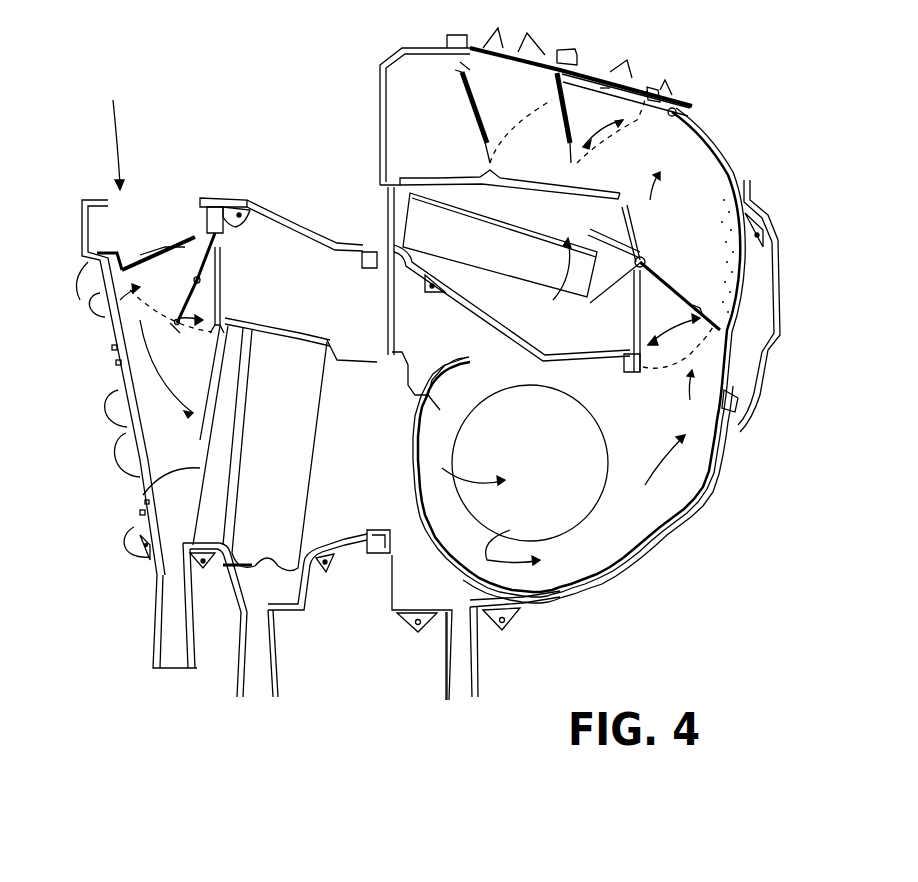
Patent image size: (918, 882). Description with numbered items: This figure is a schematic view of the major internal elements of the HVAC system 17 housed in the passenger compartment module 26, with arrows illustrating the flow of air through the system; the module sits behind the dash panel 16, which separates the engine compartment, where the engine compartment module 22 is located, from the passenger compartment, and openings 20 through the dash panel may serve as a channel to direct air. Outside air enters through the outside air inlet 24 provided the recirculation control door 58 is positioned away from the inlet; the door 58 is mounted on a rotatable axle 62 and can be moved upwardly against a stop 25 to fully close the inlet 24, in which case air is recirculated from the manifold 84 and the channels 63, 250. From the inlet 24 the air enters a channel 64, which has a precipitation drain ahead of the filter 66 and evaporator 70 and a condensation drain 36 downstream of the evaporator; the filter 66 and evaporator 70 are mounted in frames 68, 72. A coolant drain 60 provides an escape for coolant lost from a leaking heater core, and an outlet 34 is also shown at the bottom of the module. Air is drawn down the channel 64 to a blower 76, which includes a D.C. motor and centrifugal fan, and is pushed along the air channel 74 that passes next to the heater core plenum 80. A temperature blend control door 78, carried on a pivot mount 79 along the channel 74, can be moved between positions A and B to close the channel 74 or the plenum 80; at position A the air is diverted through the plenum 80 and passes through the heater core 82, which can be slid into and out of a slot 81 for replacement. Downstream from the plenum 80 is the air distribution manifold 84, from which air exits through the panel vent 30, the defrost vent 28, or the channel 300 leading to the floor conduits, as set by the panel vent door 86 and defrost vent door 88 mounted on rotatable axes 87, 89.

The dash panel 16 is at (375, 350).
The HVAC system 17 is at (645, 605).
The openings 20 is at (398, 414).
The engine compartment module 22 is at (118, 372).
The outside air inlet 24 is at (162, 224).
The stop 25 is at (80, 290).
The passenger compartment module 26 is at (745, 452).
The defrost vent 28 is at (540, 42).
The panel vent 30 is at (628, 62).
The air outlet duct 34 is at (170, 670).
The condensation drain 36 is at (262, 690).
The recirculation control door 58 is at (218, 284).
The coolant drain 60 is at (478, 695).
The rotatable axle 62 is at (222, 224).
The channel 63 is at (345, 290).
The channel 64 is at (202, 369).
The filter 66 is at (143, 493).
The frame 68 is at (258, 325).
The evaporator 70 is at (295, 490).
The frame 72 is at (252, 572).
The air channel 74 is at (660, 449).
The blower 76 is at (544, 459).
The temperature blend control door 78 is at (662, 292).
The pivot mount 79 is at (645, 258).
The heater core plenum 80 is at (531, 304).
The slot 81 is at (592, 312).
The heater core 82 is at (520, 248).
The air distribution manifold 84 is at (665, 164).
The panel vent door 86 is at (636, 88).
The rotatable axis 87 is at (576, 100).
The defrost vent door 88 is at (480, 80).
The rotatable axis 89 is at (458, 80).
The channel 250 is at (460, 334).
The channel 300 is at (455, 144).